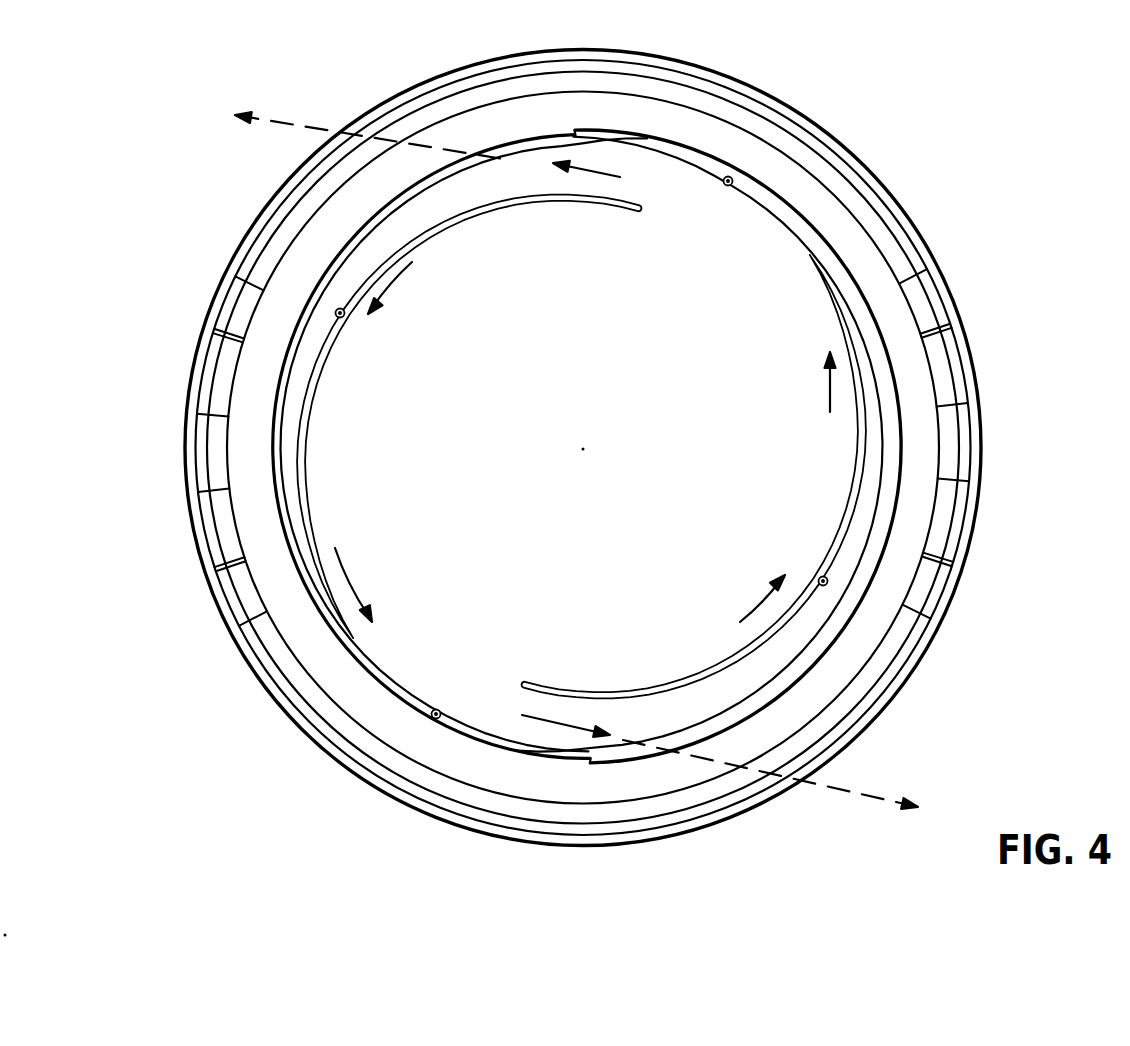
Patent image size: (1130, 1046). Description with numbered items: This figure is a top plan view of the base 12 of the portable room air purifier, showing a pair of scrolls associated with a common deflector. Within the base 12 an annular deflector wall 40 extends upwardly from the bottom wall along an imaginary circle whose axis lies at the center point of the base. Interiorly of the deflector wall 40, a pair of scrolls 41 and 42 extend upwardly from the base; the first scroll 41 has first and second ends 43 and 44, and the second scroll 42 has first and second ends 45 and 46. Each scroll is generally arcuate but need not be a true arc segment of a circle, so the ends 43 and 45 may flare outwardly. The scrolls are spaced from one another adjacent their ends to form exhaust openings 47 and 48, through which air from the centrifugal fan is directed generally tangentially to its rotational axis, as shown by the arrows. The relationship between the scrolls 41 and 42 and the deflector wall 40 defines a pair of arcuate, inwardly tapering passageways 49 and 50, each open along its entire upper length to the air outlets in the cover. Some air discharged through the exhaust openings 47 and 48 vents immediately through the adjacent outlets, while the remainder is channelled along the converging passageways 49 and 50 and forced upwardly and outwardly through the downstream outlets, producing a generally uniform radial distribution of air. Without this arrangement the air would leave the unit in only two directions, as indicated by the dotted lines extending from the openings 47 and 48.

The base 12 is at (248, 684).
The annular deflector wall 40 is at (276, 377).
The scroll 41 is at (303, 455).
The scroll 42 is at (858, 416).
The first end of scroll 43 is at (588, 765).
The second end of scroll 44 is at (640, 211).
The first end of scroll 45 is at (556, 645).
The second end of scroll 46 is at (575, 128).
The exhaust opening 47 is at (515, 703).
The exhaust opening 48 is at (650, 176).
The arcuate inwardly tapering passageway 49 is at (862, 539).
The arcuate inwardly tapering passageway 50 is at (397, 226).